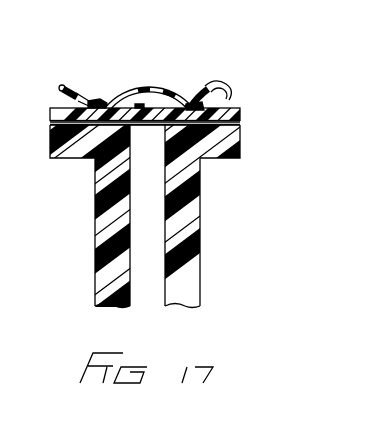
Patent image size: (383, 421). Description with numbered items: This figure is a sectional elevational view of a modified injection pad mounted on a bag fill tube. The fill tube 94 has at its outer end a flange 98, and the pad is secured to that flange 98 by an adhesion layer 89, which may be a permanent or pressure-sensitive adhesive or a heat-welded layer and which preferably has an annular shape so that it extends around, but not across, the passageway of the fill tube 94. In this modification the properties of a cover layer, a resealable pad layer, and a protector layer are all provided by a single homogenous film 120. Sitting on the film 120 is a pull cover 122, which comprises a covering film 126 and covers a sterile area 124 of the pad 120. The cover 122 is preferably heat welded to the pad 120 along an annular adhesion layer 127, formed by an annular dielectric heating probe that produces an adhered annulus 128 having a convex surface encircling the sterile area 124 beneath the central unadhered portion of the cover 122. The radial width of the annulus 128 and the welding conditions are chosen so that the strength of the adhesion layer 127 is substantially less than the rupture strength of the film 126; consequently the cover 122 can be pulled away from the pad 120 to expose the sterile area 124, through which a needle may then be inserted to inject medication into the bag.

The homogenous film 120 is at (232, 110).
The adhesion layer 89 is at (240, 123).
The fill tube 94 is at (202, 211).
The flange 98 is at (228, 158).
The pull cover 122 is at (141, 76).
The sterile area 124 is at (140, 106).
The covering film 126 is at (173, 95).
The annular adhesion layer 127 is at (107, 101).
The adhered annulus 128 is at (90, 98).